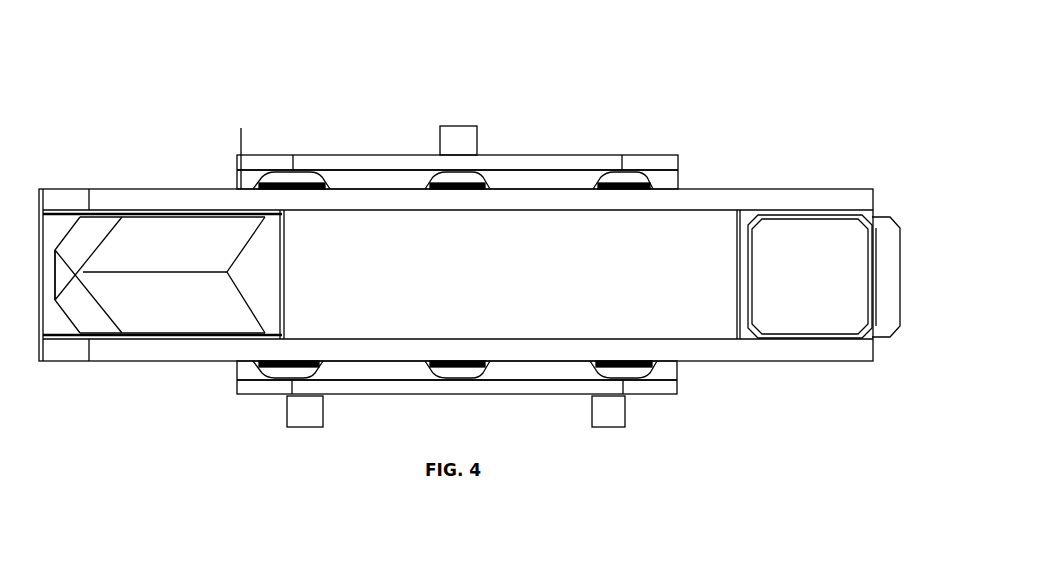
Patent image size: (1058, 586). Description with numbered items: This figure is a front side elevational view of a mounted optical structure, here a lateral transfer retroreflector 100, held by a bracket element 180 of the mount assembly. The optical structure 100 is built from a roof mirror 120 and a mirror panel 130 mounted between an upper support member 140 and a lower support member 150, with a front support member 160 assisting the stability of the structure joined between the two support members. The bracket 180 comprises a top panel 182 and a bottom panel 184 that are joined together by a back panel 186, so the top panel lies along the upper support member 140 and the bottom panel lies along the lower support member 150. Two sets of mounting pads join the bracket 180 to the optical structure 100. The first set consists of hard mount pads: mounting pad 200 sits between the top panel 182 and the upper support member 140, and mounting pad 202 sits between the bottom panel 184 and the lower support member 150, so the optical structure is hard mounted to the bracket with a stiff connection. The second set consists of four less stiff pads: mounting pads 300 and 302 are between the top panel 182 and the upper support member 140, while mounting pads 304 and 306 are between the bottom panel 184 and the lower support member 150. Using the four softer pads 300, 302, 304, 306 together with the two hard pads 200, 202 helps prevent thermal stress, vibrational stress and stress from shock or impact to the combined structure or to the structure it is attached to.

The lateral transfer retroreflector 100 is at (698, 199).
The roof mirror 120 is at (97, 310).
The mirror panel 130 is at (832, 283).
The upper support member 140 is at (132, 198).
The lower support member 150 is at (148, 353).
The front support member 160 is at (702, 255).
The bracket element 180 is at (234, 157).
The top panel 182 is at (547, 163).
The bottom panel 184 is at (520, 388).
The back panel 186 is at (362, 180).
The mounting pad 200 is at (433, 180).
The mounting pad 202 is at (443, 375).
The mounting pad 300 is at (275, 178).
The mounting pad 302 is at (633, 178).
The mounting pad 304 is at (273, 372).
The mounting pad 306 is at (647, 372).